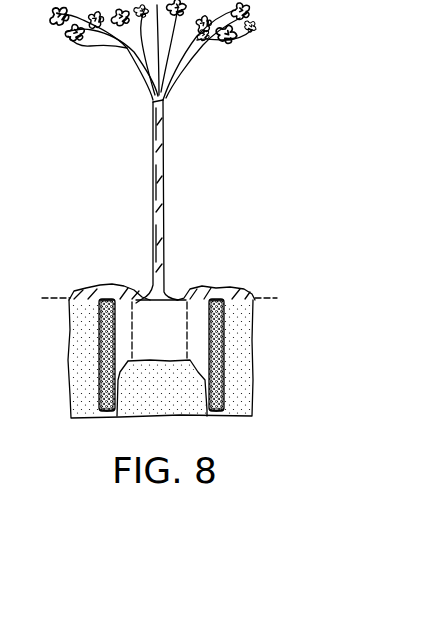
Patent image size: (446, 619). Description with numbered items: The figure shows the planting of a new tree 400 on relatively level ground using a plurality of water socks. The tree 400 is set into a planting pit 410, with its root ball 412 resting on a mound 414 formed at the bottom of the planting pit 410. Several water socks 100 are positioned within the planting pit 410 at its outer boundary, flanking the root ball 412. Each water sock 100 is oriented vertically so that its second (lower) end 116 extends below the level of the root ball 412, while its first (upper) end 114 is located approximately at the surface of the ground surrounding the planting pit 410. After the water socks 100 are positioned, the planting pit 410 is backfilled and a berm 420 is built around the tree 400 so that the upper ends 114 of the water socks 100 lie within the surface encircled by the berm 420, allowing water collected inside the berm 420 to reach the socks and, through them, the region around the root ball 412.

The tree 400 is at (198, 119).
The berm 420 is at (78, 290).
The root ball 412 is at (143, 304).
The mound 414 is at (125, 388).
The first (upper) ends 114 is at (102, 297).
The second (lower) ends 116 is at (102, 411).
The water socks 100 is at (107, 278).
The planting pit 410 is at (192, 302).